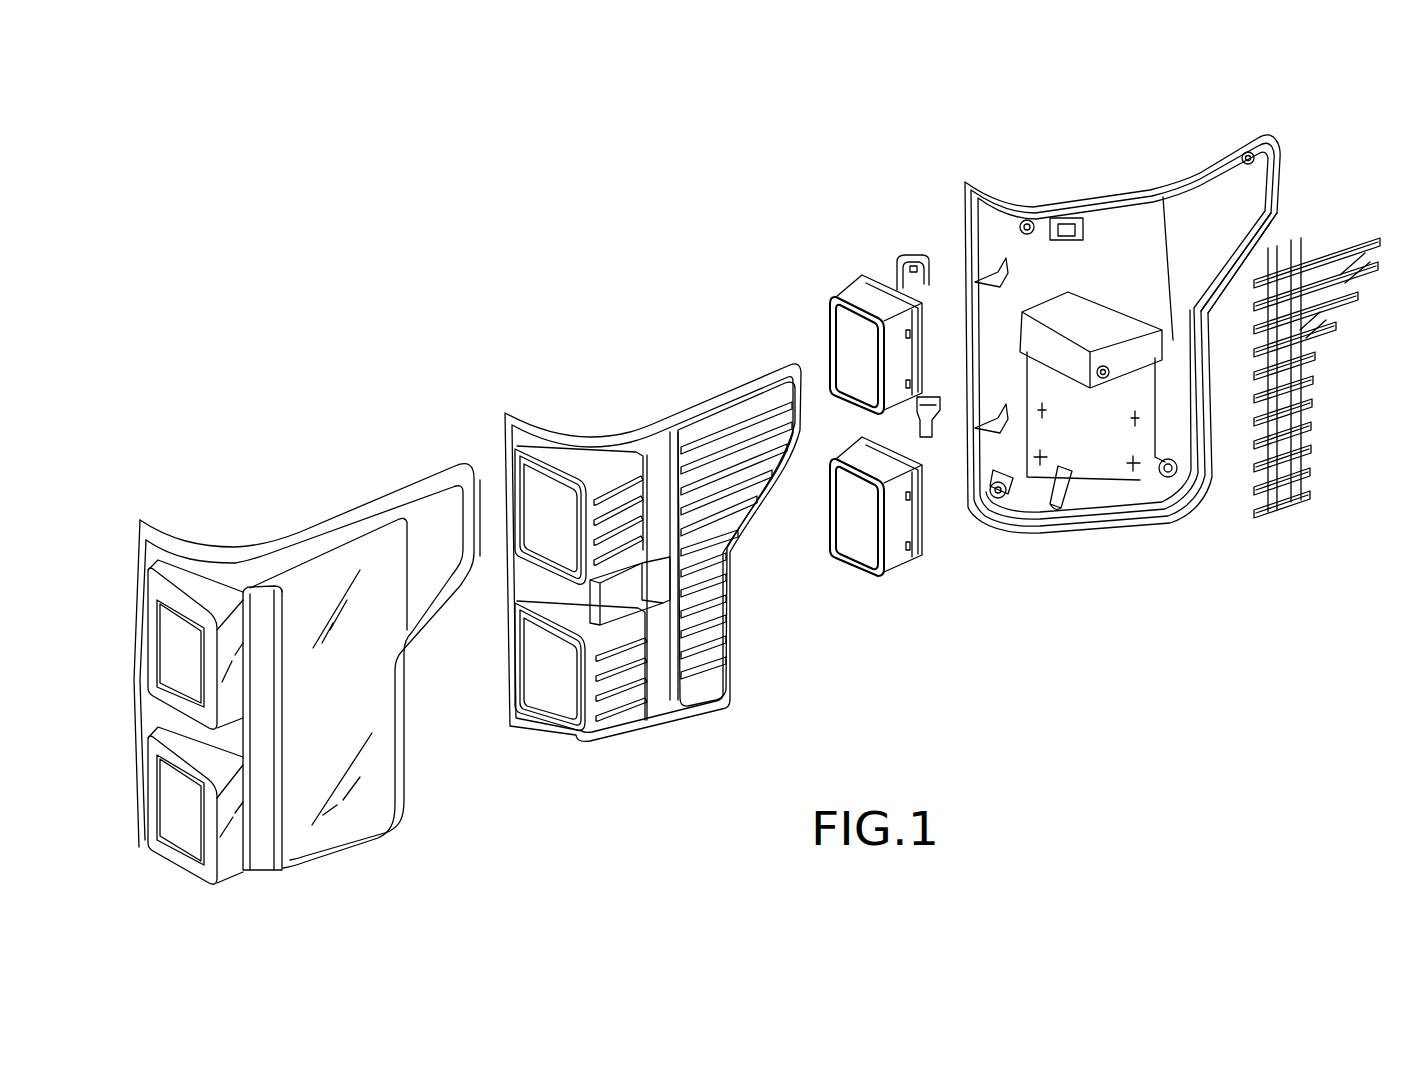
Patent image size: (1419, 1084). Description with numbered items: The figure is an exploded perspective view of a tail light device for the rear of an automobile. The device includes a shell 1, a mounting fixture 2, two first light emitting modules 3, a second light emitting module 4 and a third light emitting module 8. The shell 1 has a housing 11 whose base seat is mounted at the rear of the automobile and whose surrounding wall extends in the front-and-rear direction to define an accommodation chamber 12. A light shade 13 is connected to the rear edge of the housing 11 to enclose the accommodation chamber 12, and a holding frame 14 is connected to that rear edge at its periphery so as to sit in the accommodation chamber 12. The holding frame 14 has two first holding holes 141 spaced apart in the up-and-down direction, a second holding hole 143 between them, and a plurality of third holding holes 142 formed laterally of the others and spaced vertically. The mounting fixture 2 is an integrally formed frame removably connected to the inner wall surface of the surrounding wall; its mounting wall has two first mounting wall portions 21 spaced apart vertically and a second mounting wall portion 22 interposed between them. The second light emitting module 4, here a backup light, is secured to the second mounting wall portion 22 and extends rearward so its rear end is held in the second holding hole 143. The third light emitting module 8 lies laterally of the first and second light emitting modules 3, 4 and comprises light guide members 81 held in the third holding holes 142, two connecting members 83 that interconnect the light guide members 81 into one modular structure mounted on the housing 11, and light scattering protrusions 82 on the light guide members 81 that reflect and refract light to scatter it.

The shell 1 is at (307, 647).
The light shade 13 is at (430, 526).
The holding frame 14 is at (658, 573).
The first holding holes 141 is at (540, 473).
The third holding holes 142 is at (728, 418).
The second holding hole 143 is at (596, 622).
The first light emitting modules 3 is at (853, 419).
The second light emitting module 4 is at (836, 459).
The first mounting wall portions 21 is at (882, 290).
The second mounting wall portion 22 is at (943, 405).
The mounting fixture 2 is at (1106, 358).
The housing 11 is at (1192, 217).
The accommodation chamber 12 is at (1088, 409).
The third light emitting module 8 is at (1310, 321).
The light guide members 81 is at (1316, 245).
The light scattering protrusions 82 is at (1312, 408).
The connecting members 83 is at (1345, 283).